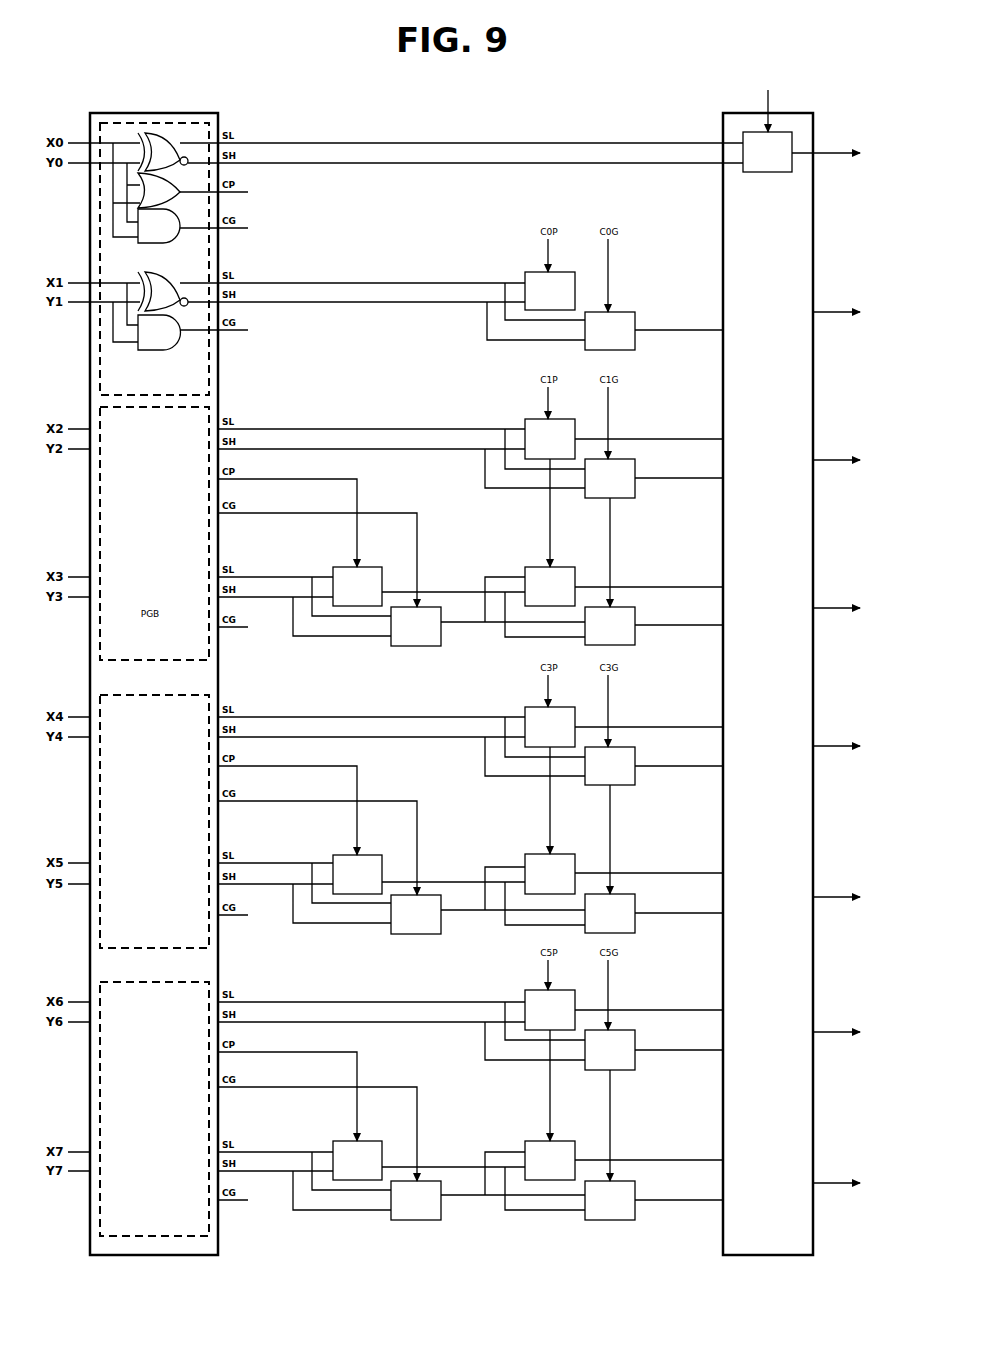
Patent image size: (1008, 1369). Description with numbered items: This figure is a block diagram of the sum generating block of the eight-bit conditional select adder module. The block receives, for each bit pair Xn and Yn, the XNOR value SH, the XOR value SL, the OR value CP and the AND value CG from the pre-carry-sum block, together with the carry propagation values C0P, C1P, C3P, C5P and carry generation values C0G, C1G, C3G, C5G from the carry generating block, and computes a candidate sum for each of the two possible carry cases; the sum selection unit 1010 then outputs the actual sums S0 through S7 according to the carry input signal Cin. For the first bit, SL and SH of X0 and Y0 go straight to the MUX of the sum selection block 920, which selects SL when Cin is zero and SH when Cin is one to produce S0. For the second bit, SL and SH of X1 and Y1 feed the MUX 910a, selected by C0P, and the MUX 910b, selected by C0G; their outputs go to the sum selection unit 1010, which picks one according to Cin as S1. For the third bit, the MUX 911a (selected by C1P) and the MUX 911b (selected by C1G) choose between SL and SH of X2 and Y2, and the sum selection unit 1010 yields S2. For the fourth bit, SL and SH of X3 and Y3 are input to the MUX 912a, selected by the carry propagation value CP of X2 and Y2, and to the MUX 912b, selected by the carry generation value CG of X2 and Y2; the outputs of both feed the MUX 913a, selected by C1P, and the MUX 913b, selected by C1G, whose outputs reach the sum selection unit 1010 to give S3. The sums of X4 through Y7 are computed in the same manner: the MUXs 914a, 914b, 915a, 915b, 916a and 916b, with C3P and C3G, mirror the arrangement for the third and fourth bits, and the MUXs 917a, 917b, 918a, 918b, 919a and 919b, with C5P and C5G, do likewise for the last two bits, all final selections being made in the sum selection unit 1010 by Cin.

The sum selection unit 1010 is at (788, 112).
The sum selection block 920 is at (795, 143).
The MUX 910a is at (558, 270).
The MUX 910b is at (637, 320).
The MUX 911a is at (558, 417).
The MUX 911b is at (637, 467).
The MUX 912a is at (368, 566).
The MUX 912b is at (441, 620).
The MUX 913a is at (558, 565).
The MUX 913b is at (637, 615).
The MUX 914a is at (558, 705).
The MUX 914b is at (637, 755).
The MUX 915a is at (368, 854).
The MUX 915b is at (441, 908).
The MUX 916a is at (558, 852).
The MUX 916b is at (637, 902).
The MUX 917a is at (558, 988).
The MUX 917b is at (637, 1038).
The MUX 918a is at (368, 1140).
The MUX 918b is at (441, 1194).
The MUX 919a is at (558, 1139).
The MUX 919b is at (637, 1189).